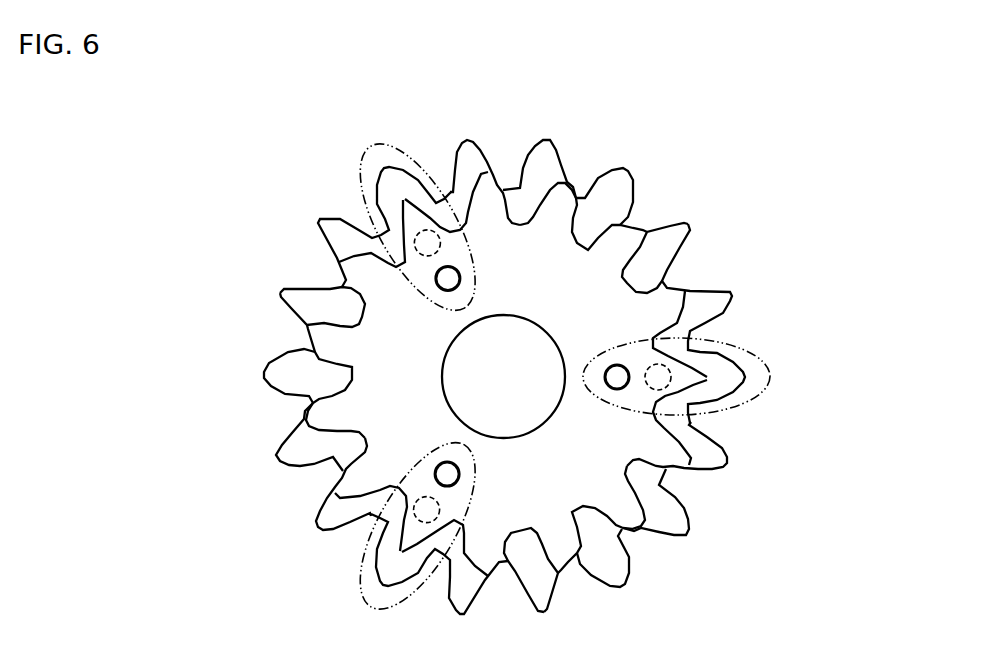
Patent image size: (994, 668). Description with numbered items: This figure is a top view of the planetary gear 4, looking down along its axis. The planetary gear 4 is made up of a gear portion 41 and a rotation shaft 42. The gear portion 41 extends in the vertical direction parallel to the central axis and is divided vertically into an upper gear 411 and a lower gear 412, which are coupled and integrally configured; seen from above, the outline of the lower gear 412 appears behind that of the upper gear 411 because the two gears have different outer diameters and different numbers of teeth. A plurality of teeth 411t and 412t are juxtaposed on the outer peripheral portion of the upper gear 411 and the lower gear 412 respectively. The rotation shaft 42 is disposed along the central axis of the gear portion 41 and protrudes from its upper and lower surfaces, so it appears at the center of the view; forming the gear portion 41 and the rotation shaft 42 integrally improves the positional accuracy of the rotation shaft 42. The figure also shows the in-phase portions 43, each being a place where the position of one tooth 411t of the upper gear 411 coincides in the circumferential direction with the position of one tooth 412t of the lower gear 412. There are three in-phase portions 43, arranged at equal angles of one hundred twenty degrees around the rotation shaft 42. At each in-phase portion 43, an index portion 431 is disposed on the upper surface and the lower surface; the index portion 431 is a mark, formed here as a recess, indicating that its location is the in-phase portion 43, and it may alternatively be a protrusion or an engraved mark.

The planetary gear 4 is at (725, 159).
The gear portion 41 is at (181, 308).
The upper gear 411 is at (289, 337).
The lower gear 412 is at (254, 378).
The teeth of the upper gear 411t is at (279, 291).
The teeth of the lower gear 412t is at (276, 450).
The rotation shaft 42 is at (532, 357).
The in-phase portion 43 is at (407, 160).
The index portion 431 is at (434, 278).